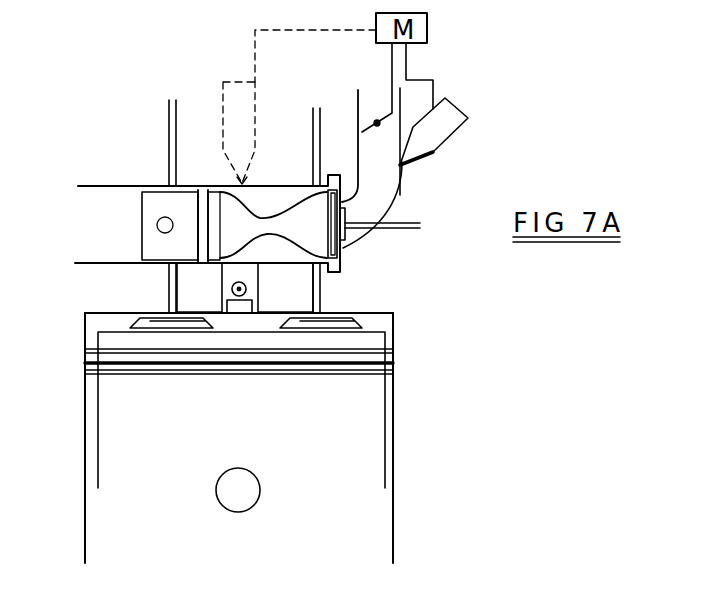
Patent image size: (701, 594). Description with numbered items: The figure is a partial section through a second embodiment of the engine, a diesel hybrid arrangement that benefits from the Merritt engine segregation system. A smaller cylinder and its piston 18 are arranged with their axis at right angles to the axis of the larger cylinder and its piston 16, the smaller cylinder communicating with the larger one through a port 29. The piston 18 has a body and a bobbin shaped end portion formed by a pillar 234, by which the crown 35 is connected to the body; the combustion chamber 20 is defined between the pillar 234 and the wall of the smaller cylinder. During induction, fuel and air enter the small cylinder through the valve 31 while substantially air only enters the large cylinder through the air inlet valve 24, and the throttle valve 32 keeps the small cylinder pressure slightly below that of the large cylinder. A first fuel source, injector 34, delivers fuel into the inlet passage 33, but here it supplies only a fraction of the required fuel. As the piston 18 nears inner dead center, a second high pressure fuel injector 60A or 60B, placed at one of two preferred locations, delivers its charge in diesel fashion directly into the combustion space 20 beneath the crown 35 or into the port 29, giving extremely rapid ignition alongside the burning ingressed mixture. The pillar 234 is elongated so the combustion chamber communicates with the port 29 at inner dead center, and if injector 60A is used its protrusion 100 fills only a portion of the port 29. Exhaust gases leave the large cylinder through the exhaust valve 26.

The piston 16 is at (87, 465).
The piston 18 is at (142, 214).
The combustion chamber 20 is at (282, 203).
The air inlet valve 24 is at (396, 309).
The exhaust valve 26 is at (130, 333).
The port 29 is at (245, 270).
The valve 31 is at (400, 227).
The throttle valve 32 is at (388, 115).
The inlet passage 33 is at (388, 186).
The injector 34 is at (452, 108).
The crown 35 is at (343, 255).
The high pressure fuel injector 60A is at (246, 300).
The high pressure fuel injector 60B is at (233, 123).
The protrusion 100 is at (235, 322).
The pillar 234 is at (232, 218).